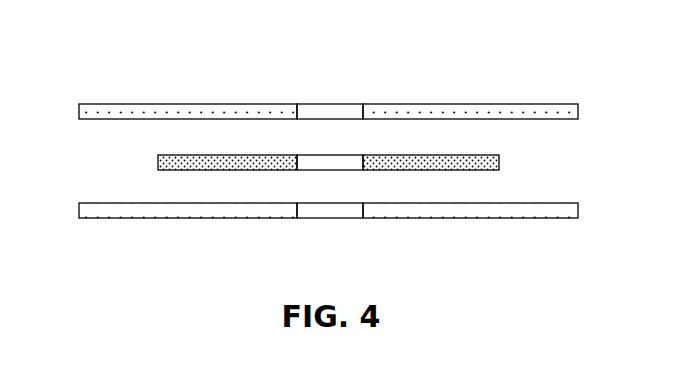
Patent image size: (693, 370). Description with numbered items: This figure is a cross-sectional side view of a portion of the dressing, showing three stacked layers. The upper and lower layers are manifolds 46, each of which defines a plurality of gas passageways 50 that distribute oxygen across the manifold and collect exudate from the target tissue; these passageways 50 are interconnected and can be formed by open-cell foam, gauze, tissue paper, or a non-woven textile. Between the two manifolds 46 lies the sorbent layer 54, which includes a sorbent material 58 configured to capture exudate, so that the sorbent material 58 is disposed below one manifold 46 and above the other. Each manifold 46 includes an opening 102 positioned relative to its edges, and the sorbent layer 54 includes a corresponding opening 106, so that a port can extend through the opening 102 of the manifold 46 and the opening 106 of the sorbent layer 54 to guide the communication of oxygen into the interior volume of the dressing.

The manifold 46 is at (172, 103).
The gas passageways 50 is at (422, 112).
The sorbent layer 54 is at (158, 162).
The sorbent material 58 is at (493, 162).
The opening of manifold 102 is at (330, 104).
The opening of sorbent layer 106 is at (352, 170).